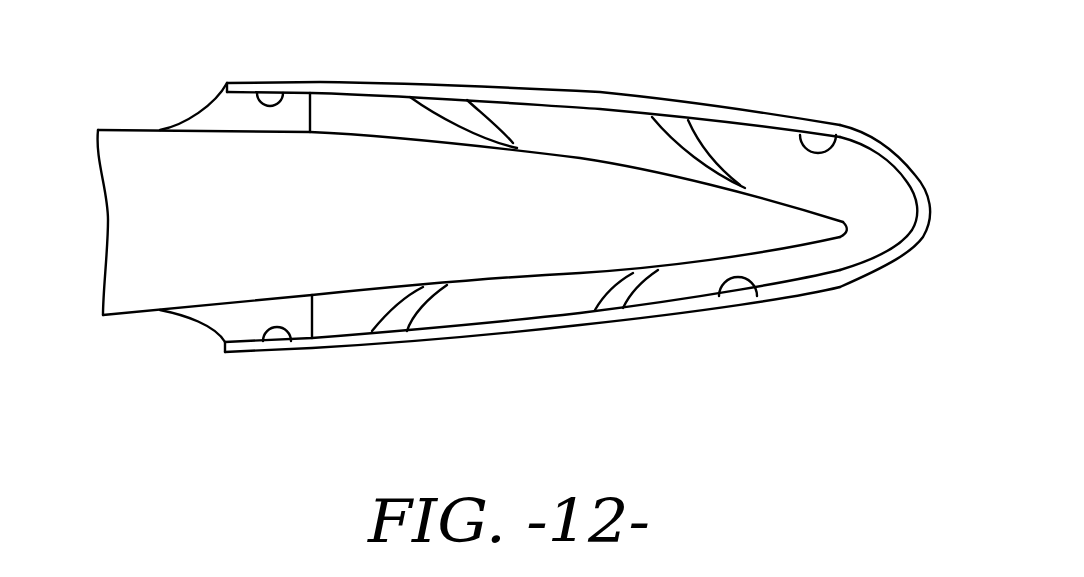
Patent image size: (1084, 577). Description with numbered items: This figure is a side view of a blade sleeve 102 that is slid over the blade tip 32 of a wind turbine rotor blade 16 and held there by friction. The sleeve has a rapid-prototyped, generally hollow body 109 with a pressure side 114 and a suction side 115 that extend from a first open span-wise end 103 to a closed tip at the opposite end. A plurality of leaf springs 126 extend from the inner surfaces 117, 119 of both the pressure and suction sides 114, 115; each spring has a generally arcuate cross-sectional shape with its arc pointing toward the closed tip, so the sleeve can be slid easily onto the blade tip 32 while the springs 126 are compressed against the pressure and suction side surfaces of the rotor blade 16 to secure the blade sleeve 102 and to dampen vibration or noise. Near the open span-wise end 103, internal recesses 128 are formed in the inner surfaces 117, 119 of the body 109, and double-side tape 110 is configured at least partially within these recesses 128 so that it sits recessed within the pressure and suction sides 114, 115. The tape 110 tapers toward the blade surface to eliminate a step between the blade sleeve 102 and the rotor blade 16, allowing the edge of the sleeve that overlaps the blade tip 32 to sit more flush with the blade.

The rotor blade 16 is at (363, 132).
The blade tip 32 is at (836, 226).
The blade sleeve 102 is at (868, 323).
The first open span-wise end 103 is at (142, 262).
The hollow body 109 is at (910, 265).
The double-side tape 110 is at (215, 111).
The pressure side 114 is at (510, 337).
The suction side 115 is at (578, 92).
The inner surface 117 is at (838, 143).
The inner surface 119 is at (759, 296).
The leaf springs 126 is at (480, 116).
The internal recesses 128 is at (260, 105).